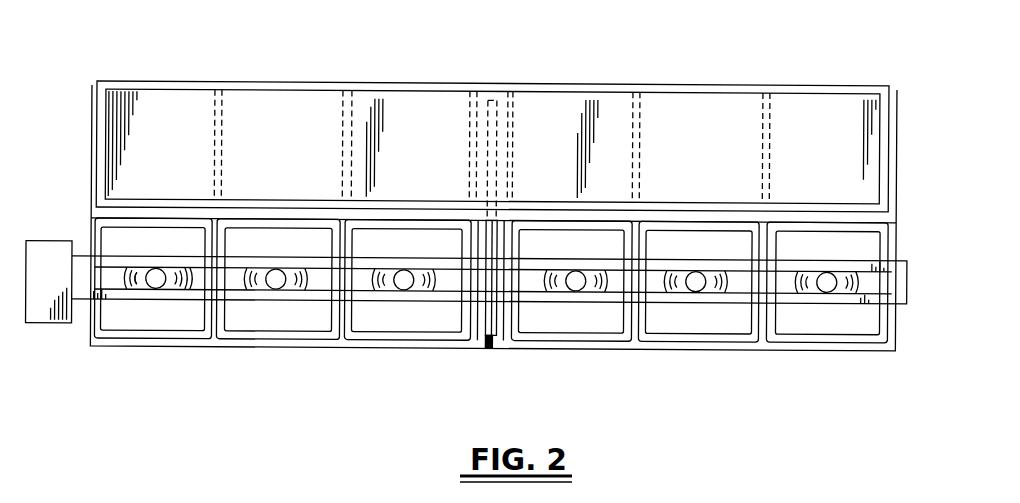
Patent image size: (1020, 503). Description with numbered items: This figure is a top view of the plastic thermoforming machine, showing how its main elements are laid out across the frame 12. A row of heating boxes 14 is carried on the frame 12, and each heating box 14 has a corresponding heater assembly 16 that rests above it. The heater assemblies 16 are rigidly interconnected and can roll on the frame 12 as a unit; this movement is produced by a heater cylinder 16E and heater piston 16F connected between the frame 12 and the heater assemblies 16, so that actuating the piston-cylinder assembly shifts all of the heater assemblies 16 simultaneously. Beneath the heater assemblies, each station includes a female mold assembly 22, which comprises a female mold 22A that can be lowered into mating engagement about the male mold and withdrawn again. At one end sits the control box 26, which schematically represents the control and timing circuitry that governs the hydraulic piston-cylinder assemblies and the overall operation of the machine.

The frame 12 is at (220, 124).
The heating box 14 is at (172, 232).
The heater assembly 16 is at (851, 77).
The heater cylinder 16E is at (512, 224).
The heater piston 16F is at (503, 129).
The female mold assembly 22 is at (150, 284).
The female mold 22A is at (178, 284).
The control box 26 is at (52, 250).